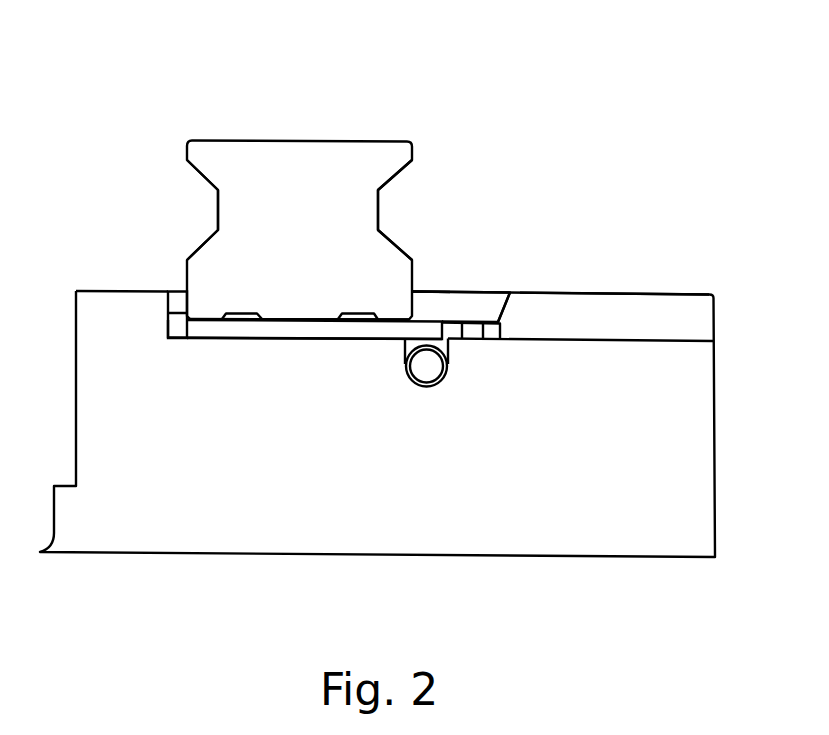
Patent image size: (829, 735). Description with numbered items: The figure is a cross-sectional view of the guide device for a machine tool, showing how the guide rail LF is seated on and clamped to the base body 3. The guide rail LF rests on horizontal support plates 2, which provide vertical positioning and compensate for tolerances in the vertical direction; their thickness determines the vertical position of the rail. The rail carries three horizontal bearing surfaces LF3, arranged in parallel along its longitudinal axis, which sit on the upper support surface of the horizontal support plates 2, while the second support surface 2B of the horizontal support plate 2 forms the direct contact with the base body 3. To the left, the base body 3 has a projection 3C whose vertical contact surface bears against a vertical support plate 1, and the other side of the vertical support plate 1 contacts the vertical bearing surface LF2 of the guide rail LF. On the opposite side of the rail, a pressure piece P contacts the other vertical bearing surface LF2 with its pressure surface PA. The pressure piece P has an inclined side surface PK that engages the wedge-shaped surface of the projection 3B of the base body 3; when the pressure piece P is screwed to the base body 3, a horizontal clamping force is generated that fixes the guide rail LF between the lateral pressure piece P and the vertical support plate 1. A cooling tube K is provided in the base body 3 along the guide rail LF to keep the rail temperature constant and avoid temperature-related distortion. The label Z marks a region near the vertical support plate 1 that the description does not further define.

The guide rail LF is at (290, 183).
The vertical bearing surface LF2 is at (184, 263).
The horizontal bearing surface LF3 is at (209, 319).
The vertical support plate 1 is at (172, 293).
The horizontal support plate 2 is at (244, 327).
The second support surface 2B is at (275, 340).
The base body 3 is at (643, 510).
The projection 3B is at (660, 316).
The projection 3C is at (117, 315).
The gap Z is at (168, 332).
The pressure piece P is at (462, 305).
The pressure surface PA is at (424, 293).
The inclined side surface PK is at (511, 307).
The cooling tube K is at (430, 367).